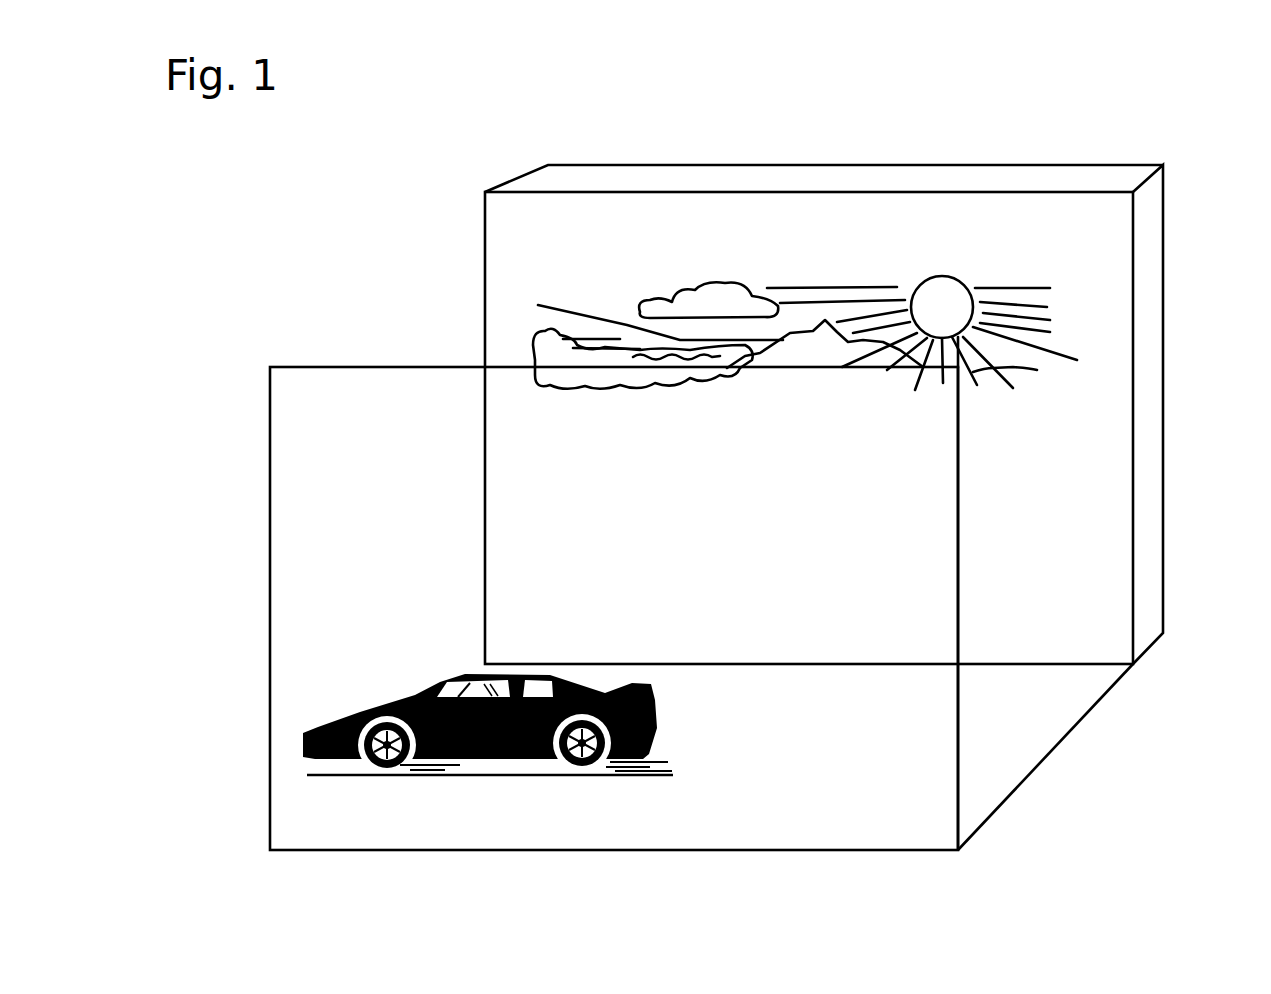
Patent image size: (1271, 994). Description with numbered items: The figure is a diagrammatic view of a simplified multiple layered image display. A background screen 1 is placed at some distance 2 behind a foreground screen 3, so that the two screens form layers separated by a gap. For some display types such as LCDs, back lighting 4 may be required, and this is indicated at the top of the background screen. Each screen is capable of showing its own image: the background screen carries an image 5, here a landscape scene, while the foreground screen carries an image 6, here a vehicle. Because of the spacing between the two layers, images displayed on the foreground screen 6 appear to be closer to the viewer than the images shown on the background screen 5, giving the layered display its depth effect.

The background screen 1 is at (1123, 270).
The distance 2 is at (1082, 732).
The foreground screen 3 is at (968, 782).
The back lighting 4 is at (603, 163).
The image on background screen 5 is at (532, 320).
The image on foreground screen 6 is at (418, 783).